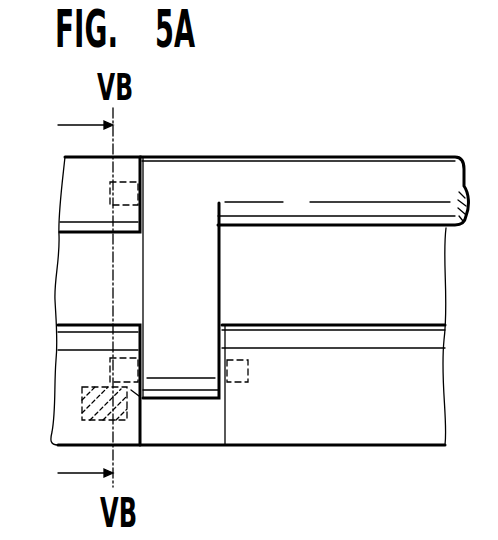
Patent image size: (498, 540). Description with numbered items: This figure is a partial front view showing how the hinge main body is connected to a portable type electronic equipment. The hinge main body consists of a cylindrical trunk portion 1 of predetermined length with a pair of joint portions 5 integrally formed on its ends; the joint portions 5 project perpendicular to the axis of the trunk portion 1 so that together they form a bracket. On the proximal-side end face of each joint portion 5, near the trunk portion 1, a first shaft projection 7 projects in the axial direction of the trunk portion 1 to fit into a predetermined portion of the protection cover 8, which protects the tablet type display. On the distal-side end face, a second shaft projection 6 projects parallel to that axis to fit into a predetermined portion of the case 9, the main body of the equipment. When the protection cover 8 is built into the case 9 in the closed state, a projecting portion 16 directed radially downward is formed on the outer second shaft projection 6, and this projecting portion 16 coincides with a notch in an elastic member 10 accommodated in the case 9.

The trunk portion 1 is at (375, 173).
The joint portion 5 is at (170, 294).
The second shaft projection 6 is at (110, 370).
The first shaft projection 7 is at (110, 193).
The protection cover 8 is at (80, 208).
The case 9 is at (396, 415).
The elastic member 10 is at (82, 407).
The projecting portion 16 is at (135, 395).